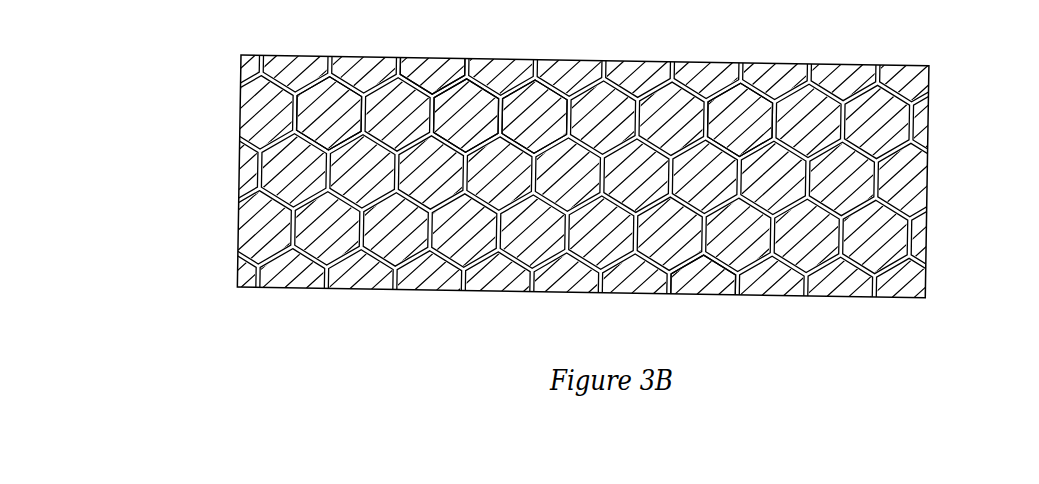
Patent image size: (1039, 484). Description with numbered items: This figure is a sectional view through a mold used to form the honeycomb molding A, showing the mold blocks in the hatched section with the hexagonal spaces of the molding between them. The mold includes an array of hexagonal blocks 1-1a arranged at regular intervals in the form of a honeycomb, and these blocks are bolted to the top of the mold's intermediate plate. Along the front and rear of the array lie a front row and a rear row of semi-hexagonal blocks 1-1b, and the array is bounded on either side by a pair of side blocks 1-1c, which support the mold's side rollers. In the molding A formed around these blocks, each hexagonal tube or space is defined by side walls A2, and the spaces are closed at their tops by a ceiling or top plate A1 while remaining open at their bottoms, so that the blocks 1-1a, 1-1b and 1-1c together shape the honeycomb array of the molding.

The honeycomb molding A is at (327, 56).
The top plate A1 is at (439, 59).
The side walls A2 is at (476, 69).
The hexagonal blocks 1-1a is at (752, 105).
The semi-hexagonal blocks 1-1b is at (525, 73).
The side blocks 1-1c is at (250, 122).